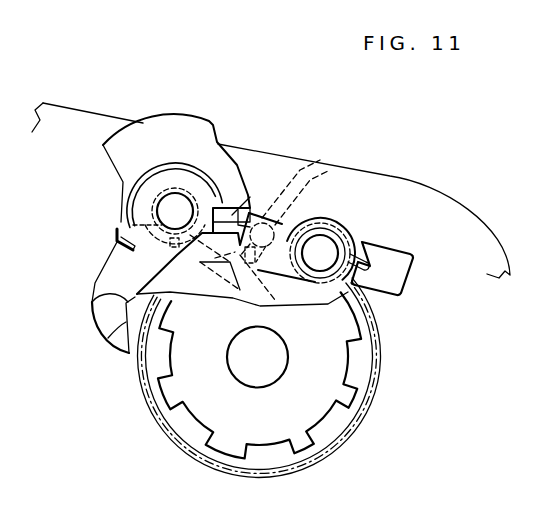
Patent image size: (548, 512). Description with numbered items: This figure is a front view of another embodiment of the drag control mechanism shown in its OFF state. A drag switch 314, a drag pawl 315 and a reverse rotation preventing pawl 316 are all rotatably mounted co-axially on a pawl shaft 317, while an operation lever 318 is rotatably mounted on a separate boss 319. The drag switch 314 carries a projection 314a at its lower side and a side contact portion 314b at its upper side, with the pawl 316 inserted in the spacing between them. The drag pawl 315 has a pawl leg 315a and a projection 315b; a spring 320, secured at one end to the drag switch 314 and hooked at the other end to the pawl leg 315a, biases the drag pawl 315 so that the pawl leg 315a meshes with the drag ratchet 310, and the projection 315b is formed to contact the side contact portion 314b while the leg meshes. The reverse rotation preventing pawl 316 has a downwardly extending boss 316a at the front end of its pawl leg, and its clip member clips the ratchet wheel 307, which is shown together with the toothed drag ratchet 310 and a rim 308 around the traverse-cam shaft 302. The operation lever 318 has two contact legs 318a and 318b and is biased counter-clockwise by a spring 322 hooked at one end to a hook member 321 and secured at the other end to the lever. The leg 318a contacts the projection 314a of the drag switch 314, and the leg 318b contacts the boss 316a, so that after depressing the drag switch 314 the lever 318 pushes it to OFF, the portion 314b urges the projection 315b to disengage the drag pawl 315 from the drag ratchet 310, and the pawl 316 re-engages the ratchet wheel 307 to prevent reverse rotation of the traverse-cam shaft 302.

The traverse-cam shaft 302 is at (263, 363).
The ratchet wheel 307 is at (300, 284).
The ratchet wheel rim 308 is at (367, 401).
The drag ratchet 310 is at (310, 430).
The drag switch 314 is at (143, 114).
The projection 314a is at (120, 298).
The side contact portion 314b is at (252, 190).
The drag pawl 315 is at (90, 288).
The pawl leg 315a is at (122, 330).
The projection 315b is at (222, 220).
The reverse rotation preventing pawl 316 is at (263, 214).
The boss 316a is at (351, 230).
The pawl shaft 317 is at (185, 200).
The operation lever 318 is at (359, 231).
The contact leg 318a is at (305, 183).
The contact leg 318b is at (240, 306).
The boss 319 is at (325, 258).
The spring 320 is at (114, 233).
The hook member 321 is at (412, 273).
The spring 322 is at (366, 262).